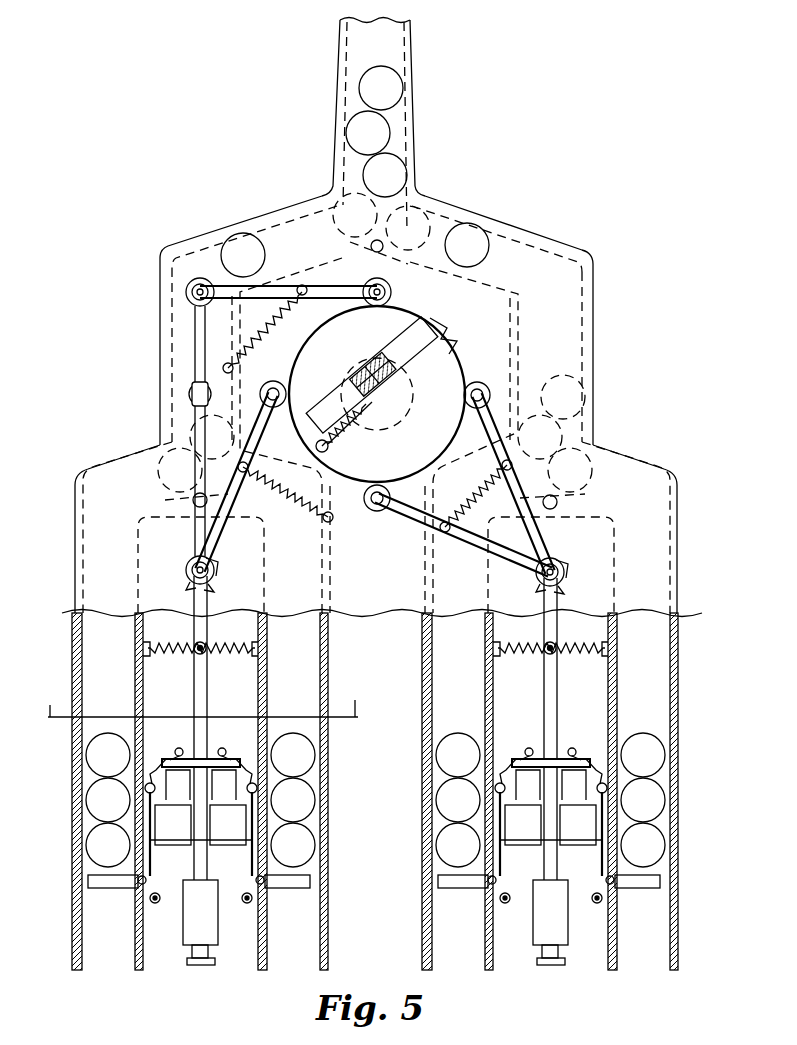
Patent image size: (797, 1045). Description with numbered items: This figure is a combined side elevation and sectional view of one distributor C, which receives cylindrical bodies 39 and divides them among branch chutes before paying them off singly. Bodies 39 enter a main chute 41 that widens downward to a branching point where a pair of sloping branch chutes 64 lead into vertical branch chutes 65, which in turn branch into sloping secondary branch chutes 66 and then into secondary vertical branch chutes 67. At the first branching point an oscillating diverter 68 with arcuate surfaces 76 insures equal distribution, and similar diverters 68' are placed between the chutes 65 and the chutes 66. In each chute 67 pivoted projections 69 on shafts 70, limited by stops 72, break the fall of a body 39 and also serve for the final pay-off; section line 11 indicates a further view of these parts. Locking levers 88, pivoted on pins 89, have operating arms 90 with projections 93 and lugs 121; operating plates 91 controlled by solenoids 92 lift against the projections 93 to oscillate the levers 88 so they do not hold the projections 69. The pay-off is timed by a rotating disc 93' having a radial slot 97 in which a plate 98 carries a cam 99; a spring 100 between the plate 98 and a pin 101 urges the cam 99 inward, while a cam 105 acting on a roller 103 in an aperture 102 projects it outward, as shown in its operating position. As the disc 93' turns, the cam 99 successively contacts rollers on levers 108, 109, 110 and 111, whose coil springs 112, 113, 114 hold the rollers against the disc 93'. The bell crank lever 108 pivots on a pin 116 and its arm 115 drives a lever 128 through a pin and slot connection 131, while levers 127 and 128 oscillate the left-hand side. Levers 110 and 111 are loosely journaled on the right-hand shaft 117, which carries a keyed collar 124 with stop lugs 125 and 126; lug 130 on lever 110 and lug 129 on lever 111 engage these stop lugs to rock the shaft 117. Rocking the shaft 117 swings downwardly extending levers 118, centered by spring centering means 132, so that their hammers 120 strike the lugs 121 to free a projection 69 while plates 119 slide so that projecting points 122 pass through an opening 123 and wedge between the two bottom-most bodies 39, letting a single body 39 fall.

The cylindrical body 39 is at (392, 75).
The main chute 41 is at (414, 112).
The arcuate surfaces 76 is at (352, 232).
The branch chutes 64 is at (268, 226).
The vertical branch chutes 65 is at (160, 332).
The secondary branch chutes 66 is at (138, 462).
The secondary vertical branch chutes 67 is at (74, 668).
The pivoted projections 69 is at (115, 893).
The section line 11 is at (200, 685).
The pin 116 is at (188, 288).
The diverter 68 is at (392, 292).
The lever 108 is at (332, 300).
The arm 115 is at (194, 360).
The pin and slot connection 131 is at (190, 392).
The coil spring 112 is at (274, 333).
The lever 109 is at (266, 382).
The coil spring 113 is at (284, 520).
The lever 110 is at (496, 392).
The lever 111 is at (397, 512).
The radial slot 97 is at (358, 486).
The aperture 102 is at (402, 356).
The roller 103 is at (406, 358).
The plate 98 is at (430, 332).
The cam 99 is at (446, 336).
The disc 93' is at (478, 346).
The cam 105 is at (396, 398).
The pin 101 is at (318, 436).
The spring 100 is at (342, 422).
The lever 127 is at (244, 520).
The coil spring 114 is at (480, 505).
The distributor C is at (606, 432).
The diverter 68' is at (370, 520).
The lever 128 is at (200, 538).
The shafts 117 is at (186, 572).
The collar 124 is at (214, 576).
The stop lug 126 is at (194, 585).
The lug 130 is at (212, 588).
The stop lug 125 is at (564, 592).
The lug 129 is at (546, 588).
The spring centering means 132 is at (230, 648).
The levers 118 is at (194, 680).
The operating plates 91 is at (206, 758).
The projections 93 is at (380, 727).
The operating arms 90 is at (172, 756).
The lugs 121 is at (376, 755).
The pins 89 is at (375, 800).
The opening 123 is at (146, 790).
The projecting points 122 is at (375, 845).
The hammers 120 is at (588, 845).
The plates 119 is at (174, 832).
The locking levers 88 is at (158, 866).
The shafts 70 is at (146, 881).
The stops 72 is at (156, 904).
The solenoids 92 is at (208, 920).